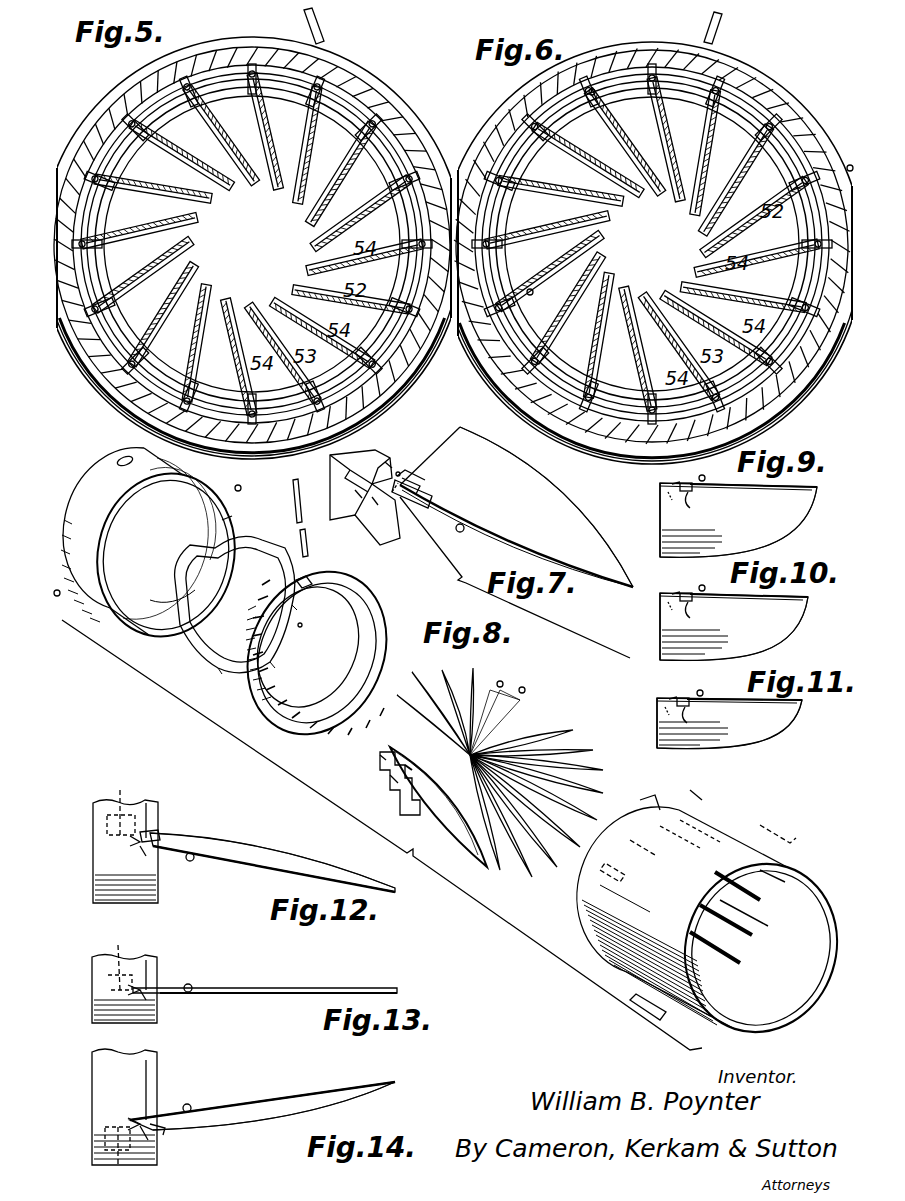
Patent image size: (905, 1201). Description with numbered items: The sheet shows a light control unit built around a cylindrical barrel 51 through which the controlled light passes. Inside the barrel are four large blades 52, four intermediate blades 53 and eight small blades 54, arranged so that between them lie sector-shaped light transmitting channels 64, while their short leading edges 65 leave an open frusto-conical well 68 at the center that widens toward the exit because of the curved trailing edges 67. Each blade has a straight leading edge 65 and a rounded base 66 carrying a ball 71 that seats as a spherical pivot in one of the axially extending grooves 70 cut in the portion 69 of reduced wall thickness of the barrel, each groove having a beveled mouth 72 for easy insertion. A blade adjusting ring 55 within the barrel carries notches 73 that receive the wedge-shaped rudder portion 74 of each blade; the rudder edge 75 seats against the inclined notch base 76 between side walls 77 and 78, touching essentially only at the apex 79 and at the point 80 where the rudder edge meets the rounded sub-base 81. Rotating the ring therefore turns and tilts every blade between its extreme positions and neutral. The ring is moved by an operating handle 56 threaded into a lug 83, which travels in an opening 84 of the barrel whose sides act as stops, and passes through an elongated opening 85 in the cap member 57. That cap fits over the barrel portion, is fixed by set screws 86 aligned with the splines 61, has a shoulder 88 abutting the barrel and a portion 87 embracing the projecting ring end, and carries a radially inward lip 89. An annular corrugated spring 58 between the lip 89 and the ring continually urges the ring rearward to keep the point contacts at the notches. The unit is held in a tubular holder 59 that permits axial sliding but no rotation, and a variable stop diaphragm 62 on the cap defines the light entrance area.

In FIG. 8, the cylindrical tube or barrel 51 is at (765, 858).
In FIG. 5, the large blade 52 is at (280, 160).
In FIG. 6, the large blade 52 is at (676, 160).
In FIG. 7, the large blade 52 is at (560, 520).
In FIG. 8, the large blade 52 is at (565, 738).
In FIG. 9, the large blade 52 is at (775, 512).
In FIG. 12, the large blade 52 is at (275, 850).
In FIG. 13, the large blade 52 is at (297, 988).
In FIG. 14, the large blade 52 is at (298, 1103).
In FIG. 5, the intermediate blade 53 is at (365, 180).
In FIG. 6, the intermediate blade 53 is at (765, 175).
In FIG. 8, the intermediate blade 53 is at (590, 780).
In FIG. 10, the intermediate blade 53 is at (772, 618).
In FIG. 5, the small blade 54 is at (345, 140).
In FIG. 6, the small blade 54 is at (745, 140).
In FIG. 8, the small blade 54 is at (585, 762).
In FIG. 11, the small blade 54 is at (772, 714).
In FIG. 5, the blade adjusting ring 55 is at (400, 140).
In FIG. 6, the blade adjusting ring 55 is at (800, 145).
In FIG. 7, the blade adjusting ring 55 is at (395, 540).
In FIG. 8, the blade adjusting ring 55 is at (275, 610).
In FIG. 12, the blade adjusting ring 55 is at (100, 808).
In FIG. 13, the blade adjusting ring 55 is at (100, 960).
In FIG. 14, the blade adjusting ring 55 is at (100, 1075).
In FIG. 5, the operating handle 56 is at (322, 18).
In FIG. 6, the operating handle 56 is at (720, 24).
In FIG. 8, the operating handle 56 is at (296, 500).
In FIG. 5, the cap member 57 is at (385, 112).
In FIG. 6, the cap member 57 is at (790, 125).
In FIG. 8, the cap member 57 is at (92, 492).
In FIG. 8, the annular spring 58 is at (200, 655).
In FIG. 5, the tubular holder 59 is at (318, 62).
In FIG. 6, the tubular holder 59 is at (735, 72).
In FIG. 8, the splines 61 is at (825, 900).
In FIG. 5, the variable stop diaphragm 62 is at (242, 100).
In FIG. 6, the variable stop diaphragm 62 is at (640, 110).
In FIG. 5, the light transmitting channels 64 is at (145, 245).
In FIG. 6, the light transmitting channels 64 is at (615, 300).
In FIG. 5, the leading edge 65 is at (200, 180).
In FIG. 6, the leading edge 65 is at (595, 192).
In FIG. 7, the leading edge 65 is at (450, 445).
In FIG. 9, the leading edge 65 is at (660, 522).
In FIG. 10, the leading edge 65 is at (660, 624).
In FIG. 11, the leading edge 65 is at (657, 712).
In FIG. 12, the leading edge 65 is at (106, 824).
In FIG. 13, the leading edge 65 is at (106, 985).
In FIG. 14, the leading edge 65 is at (104, 1137).
In FIG. 7, the base or bottom edge 66 is at (500, 543).
In FIG. 9, the base or bottom edge 66 is at (743, 490).
In FIG. 10, the base or bottom edge 66 is at (722, 592).
In FIG. 11, the base or bottom edge 66 is at (728, 698).
In FIG. 12, the base or bottom edge 66 is at (245, 866).
In FIG. 13, the base or bottom edge 66 is at (250, 994).
In FIG. 14, the base or bottom edge 66 is at (242, 1105).
In FIG. 7, the trailing or top edge 67 is at (548, 476).
In FIG. 9, the trailing or top edge 67 is at (765, 537).
In FIG. 10, the trailing or top edge 67 is at (760, 643).
In FIG. 11, the trailing or top edge 67 is at (768, 740).
In FIG. 12, the trailing or top edge 67 is at (236, 832).
In FIG. 14, the trailing or top edge 67 is at (245, 1128).
In FIG. 5, the well 68 is at (250, 270).
In FIG. 6, the well 68 is at (660, 268).
In FIG. 5, the portion of reduced wall thickness 69 is at (360, 90).
In FIG. 6, the portion of reduced wall thickness 69 is at (775, 100).
In FIG. 8, the portion of reduced wall thickness 69 is at (612, 870).
In FIG. 5, the axially extending grooves 70 is at (262, 70).
In FIG. 6, the axially extending grooves 70 is at (660, 75).
In FIG. 8, the axially extending grooves 70 is at (700, 810).
In FIG. 6, the ball 71 is at (592, 88).
In FIG. 7, the ball 71 is at (456, 530).
In FIG. 8, the ball 71 is at (505, 682).
In FIG. 9, the ball 71 is at (698, 478).
In FIG. 10, the ball 71 is at (698, 586).
In FIG. 11, the ball 71 is at (697, 691).
In FIG. 12, the ball 71 is at (190, 861).
In FIG. 13, the ball 71 is at (188, 992).
In FIG. 14, the ball 71 is at (188, 1104).
In FIG. 5, the beveled mouth 72 is at (110, 86).
In FIG. 6, the beveled mouth 72 is at (652, 253).
In FIG. 8, the beveled mouth 72 is at (735, 932).
In FIG. 5, the notches 73 is at (194, 82).
In FIG. 6, the notches 73 is at (598, 85).
In FIG. 7, the notches 73 is at (400, 472).
In FIG. 8, the notches 73 is at (300, 628).
In FIG. 7, the rudder portion 74 is at (430, 502).
In FIG. 8, the rudder portion 74 is at (390, 776).
In FIG. 9, the rudder portion 74 is at (692, 489).
In FIG. 10, the rudder portion 74 is at (692, 599).
In FIG. 11, the rudder portion 74 is at (690, 705).
In FIG. 12, the rudder portion 74 is at (155, 832).
In FIG. 14, the rudder portion 74 is at (165, 1130).
In FIG. 7, the rudder edge 75 is at (408, 474).
In FIG. 8, the rudder edge 75 is at (381, 755).
In FIG. 9, the rudder edge 75 is at (676, 487).
In FIG. 10, the rudder edge 75 is at (676, 596).
In FIG. 11, the rudder edge 75 is at (672, 698).
In FIG. 7, the notch base 76 is at (348, 478).
In FIG. 12, the notch base 76 is at (130, 843).
In FIG. 13, the notch base 76 is at (128, 990).
In FIG. 14, the notch base 76 is at (128, 1124).
In FIG. 7, the side wall 77 is at (390, 462).
In FIG. 12, the side wall 77 is at (147, 830).
In FIG. 13, the side wall 77 is at (147, 982).
In FIG. 14, the side wall 77 is at (146, 1112).
In FIG. 7, the side wall 78 is at (376, 505).
In FIG. 12, the side wall 78 is at (140, 848).
In FIG. 13, the side wall 78 is at (145, 1000).
In FIG. 14, the side wall 78 is at (148, 1140).
In FIG. 7, the apex 79 is at (358, 497).
In FIG. 7, the point 80 is at (418, 487).
In FIG. 8, the point 80 is at (410, 766).
In FIG. 9, the point 80 is at (690, 506).
In FIG. 10, the point 80 is at (688, 614).
In FIG. 11, the point 80 is at (686, 718).
In FIG. 7, the sub-base 81 is at (408, 478).
In FIG. 8, the sub-base 81 is at (398, 752).
In FIG. 9, the sub-base 81 is at (668, 495).
In FIG. 10, the sub-base 81 is at (668, 604).
In FIG. 11, the sub-base 81 is at (665, 710).
In FIG. 12, the sub-base 81 is at (117, 803).
In FIG. 13, the sub-base 81 is at (117, 956).
In FIG. 14, the sub-base 81 is at (118, 1165).
In FIG. 8, the boss or lug 83 is at (305, 590).
In FIG. 8, the slot or opening 84 is at (652, 800).
In FIG. 8, the elongated opening 85 is at (122, 458).
In FIG. 6, the set screws 86 is at (851, 165).
In FIG. 8, the set screws 86 is at (240, 488).
In FIG. 8, the cap portion 87 is at (180, 545).
In FIG. 8, the shoulder 88 is at (225, 520).
In FIG. 8, the lip 89 is at (150, 578).